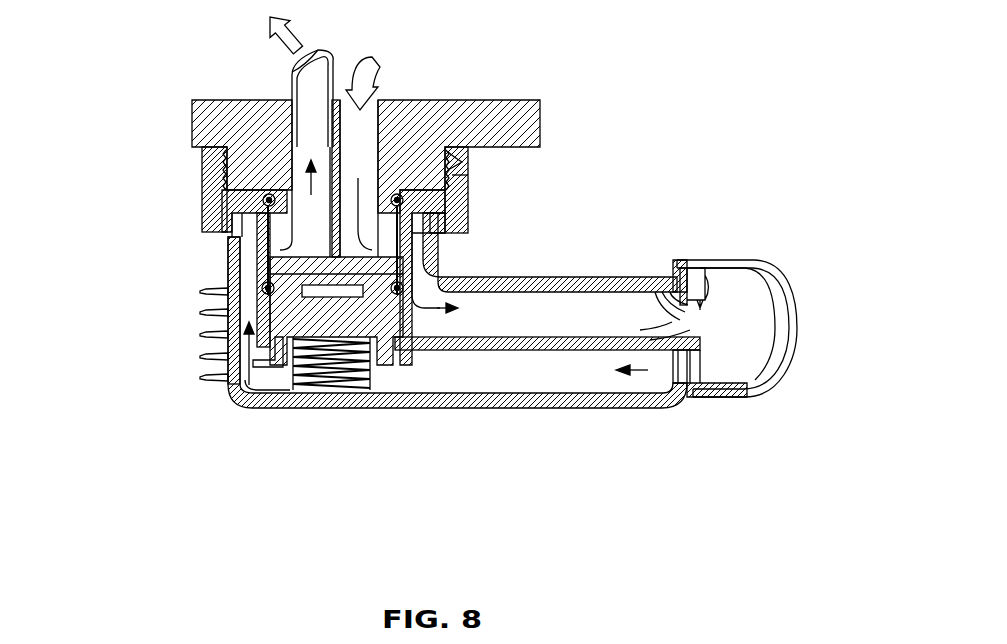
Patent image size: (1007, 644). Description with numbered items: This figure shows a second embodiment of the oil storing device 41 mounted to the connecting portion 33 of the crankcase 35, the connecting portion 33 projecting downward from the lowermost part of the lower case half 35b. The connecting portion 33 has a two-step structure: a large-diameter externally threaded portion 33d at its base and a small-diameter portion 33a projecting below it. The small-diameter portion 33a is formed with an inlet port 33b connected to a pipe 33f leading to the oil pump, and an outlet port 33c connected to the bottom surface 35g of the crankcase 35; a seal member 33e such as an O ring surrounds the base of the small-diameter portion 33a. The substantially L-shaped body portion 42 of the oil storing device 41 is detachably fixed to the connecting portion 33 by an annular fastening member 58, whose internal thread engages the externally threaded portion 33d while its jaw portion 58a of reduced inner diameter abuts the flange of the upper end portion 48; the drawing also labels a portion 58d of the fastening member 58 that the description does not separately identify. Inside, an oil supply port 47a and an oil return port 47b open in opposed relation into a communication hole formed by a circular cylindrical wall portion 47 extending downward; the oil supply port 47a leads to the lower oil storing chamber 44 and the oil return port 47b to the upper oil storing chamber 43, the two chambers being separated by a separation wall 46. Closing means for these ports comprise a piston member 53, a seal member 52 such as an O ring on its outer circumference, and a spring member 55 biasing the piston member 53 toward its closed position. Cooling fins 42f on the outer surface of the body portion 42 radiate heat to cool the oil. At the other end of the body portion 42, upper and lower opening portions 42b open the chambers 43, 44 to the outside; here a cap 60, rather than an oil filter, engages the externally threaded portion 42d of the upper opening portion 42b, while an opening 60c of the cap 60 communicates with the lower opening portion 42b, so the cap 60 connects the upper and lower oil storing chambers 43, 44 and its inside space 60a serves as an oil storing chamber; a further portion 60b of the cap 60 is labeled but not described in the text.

The connecting portion 33 is at (210, 221).
The small-diameter portion 33a is at (367, 274).
The inlet port 33b is at (276, 250).
The outlet port 33c is at (378, 252).
The externally threaded portion 33d is at (470, 160).
The seal member 33e is at (446, 216).
The pipe 33f is at (323, 63).
The crankcase 35 is at (520, 100).
The lower case half 35b is at (383, 119).
The bottom surface 35g is at (402, 100).
The oil storing device 41 is at (165, 370).
The body portion 42 is at (565, 277).
The opening portions 42b is at (660, 300).
The externally threaded portion 42d is at (228, 240).
The cooling fins 42f is at (200, 292).
The upper oil storing chamber 43 is at (493, 312).
The lower oil storing chamber 44 is at (478, 380).
The separation wall 46 is at (572, 350).
The circular cylindrical wall portion 47 is at (260, 347).
The oil supply port 47a is at (230, 213).
The oil return port 47b is at (445, 243).
The upper end portion 48 is at (222, 192).
The seal member 52 is at (228, 278).
The piston member 53 is at (298, 327).
The spring member 55 is at (367, 380).
The fastening member 58 is at (468, 193).
The jaw portion 58a is at (450, 236).
The nut thread 58d is at (468, 183).
The cap 60 is at (730, 260).
The inside space 60a is at (755, 285).
The engaging portion 60b is at (705, 290).
The opening 60c is at (700, 385).